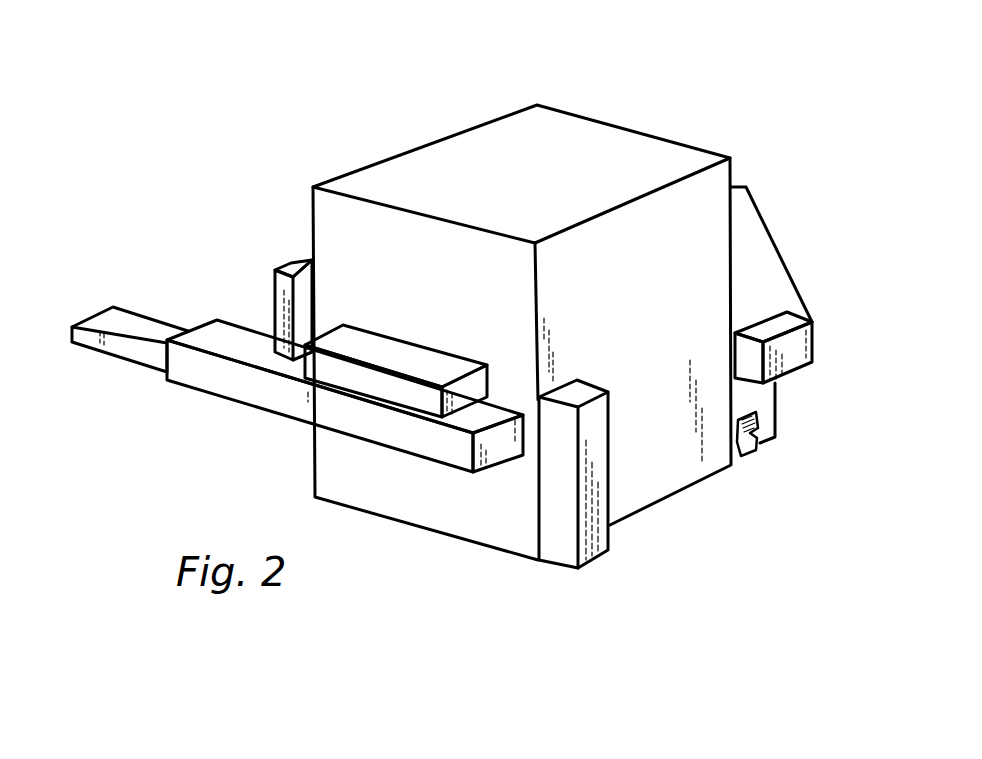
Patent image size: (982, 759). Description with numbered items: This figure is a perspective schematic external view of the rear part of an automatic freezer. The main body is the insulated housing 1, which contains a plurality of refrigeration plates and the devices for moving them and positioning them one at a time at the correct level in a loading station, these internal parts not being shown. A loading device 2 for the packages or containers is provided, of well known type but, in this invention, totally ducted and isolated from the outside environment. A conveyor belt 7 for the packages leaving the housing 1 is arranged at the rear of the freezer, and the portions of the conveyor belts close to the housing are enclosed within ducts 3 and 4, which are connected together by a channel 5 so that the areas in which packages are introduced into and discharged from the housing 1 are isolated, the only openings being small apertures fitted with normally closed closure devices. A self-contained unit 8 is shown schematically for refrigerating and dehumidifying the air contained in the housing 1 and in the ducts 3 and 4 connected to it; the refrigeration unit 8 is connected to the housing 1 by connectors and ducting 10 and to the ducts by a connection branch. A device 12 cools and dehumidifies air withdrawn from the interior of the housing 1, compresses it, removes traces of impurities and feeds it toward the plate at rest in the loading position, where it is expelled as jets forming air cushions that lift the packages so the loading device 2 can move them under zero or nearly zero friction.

The insulated housing 1 is at (438, 148).
The loading device 2 is at (760, 240).
The duct 3 is at (790, 346).
The duct 4 is at (211, 375).
The channel 5 is at (300, 262).
The conveyor belt 7 is at (144, 329).
The self-contained refrigeration unit 8 is at (757, 404).
The connector and ducting 10 is at (745, 447).
The air cooling and dehumidifying device 12 is at (565, 540).